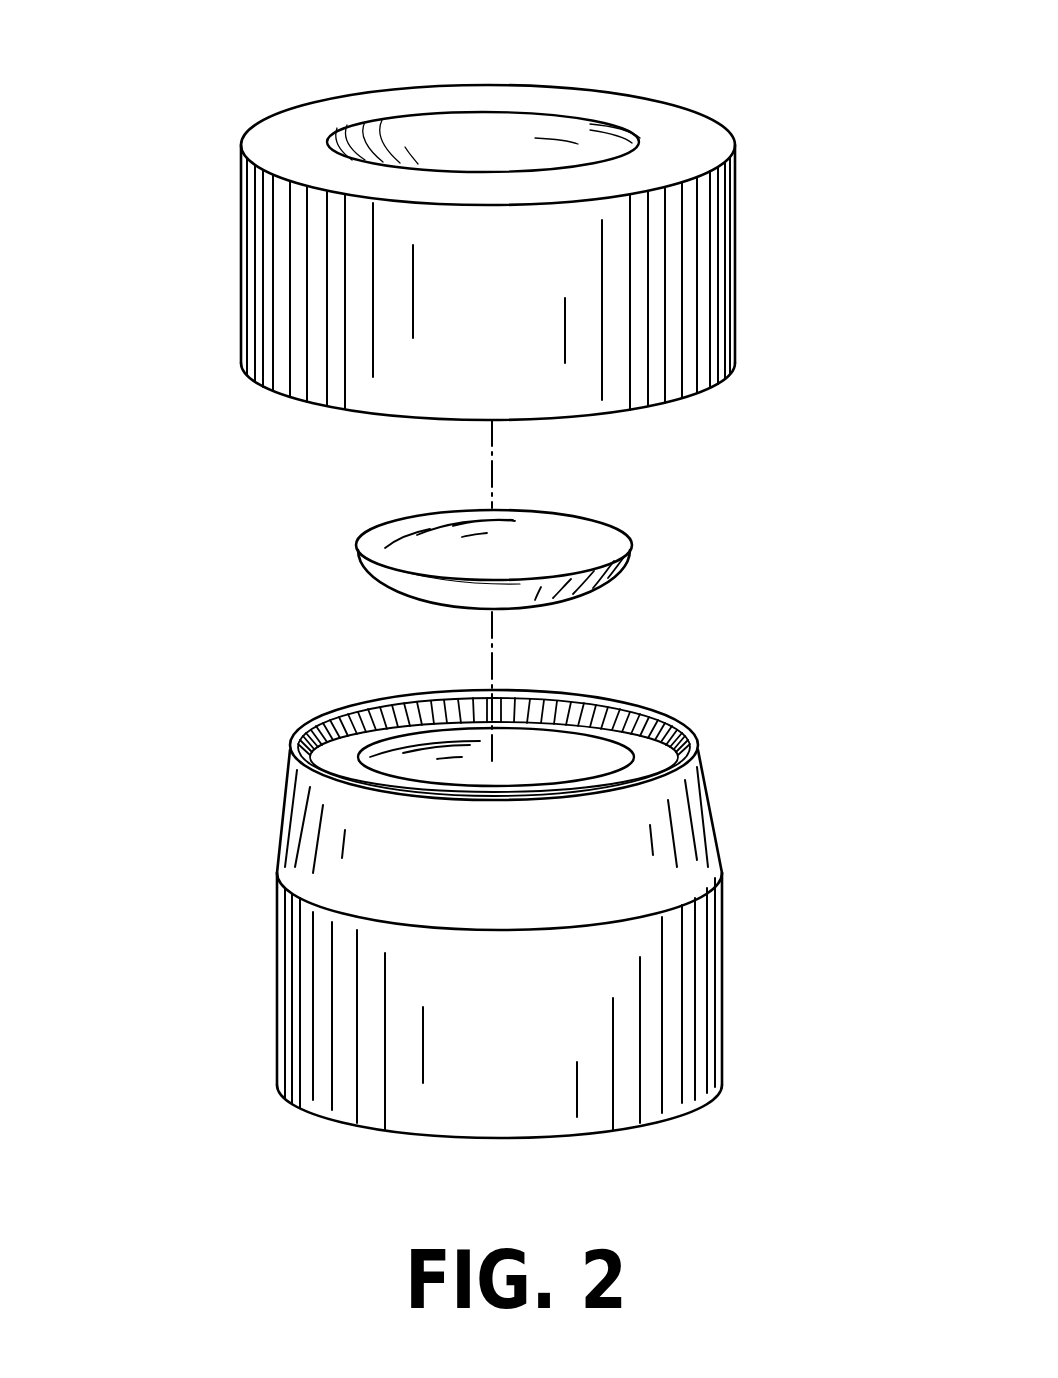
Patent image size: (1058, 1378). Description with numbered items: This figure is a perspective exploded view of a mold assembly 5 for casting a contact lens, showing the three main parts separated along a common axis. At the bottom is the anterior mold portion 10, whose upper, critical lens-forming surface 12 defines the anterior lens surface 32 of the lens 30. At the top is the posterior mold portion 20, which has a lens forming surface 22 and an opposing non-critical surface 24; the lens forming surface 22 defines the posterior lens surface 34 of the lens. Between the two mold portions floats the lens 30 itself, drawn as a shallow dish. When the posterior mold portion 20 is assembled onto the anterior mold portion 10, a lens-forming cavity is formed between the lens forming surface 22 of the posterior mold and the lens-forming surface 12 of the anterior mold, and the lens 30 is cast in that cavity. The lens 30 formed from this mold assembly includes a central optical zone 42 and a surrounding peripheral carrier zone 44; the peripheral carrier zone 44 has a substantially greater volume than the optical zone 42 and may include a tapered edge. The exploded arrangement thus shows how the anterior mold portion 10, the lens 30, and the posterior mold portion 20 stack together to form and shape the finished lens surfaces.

The mold assembly 5 is at (112, 250).
The anterior mold portion 10 is at (499, 881).
The lens-forming surface 12 is at (532, 745).
The posterior mold portion 20 is at (547, 497).
The lens forming surface 22 is at (322, 1030).
The non-critical surface 24 is at (510, 135).
The lens 30 is at (535, 548).
The anterior lens surface 32 is at (487, 607).
The posterior lens surface 34 is at (563, 533).
The central optical zone 42 is at (440, 547).
The peripheral carrier zone 44 is at (375, 550).